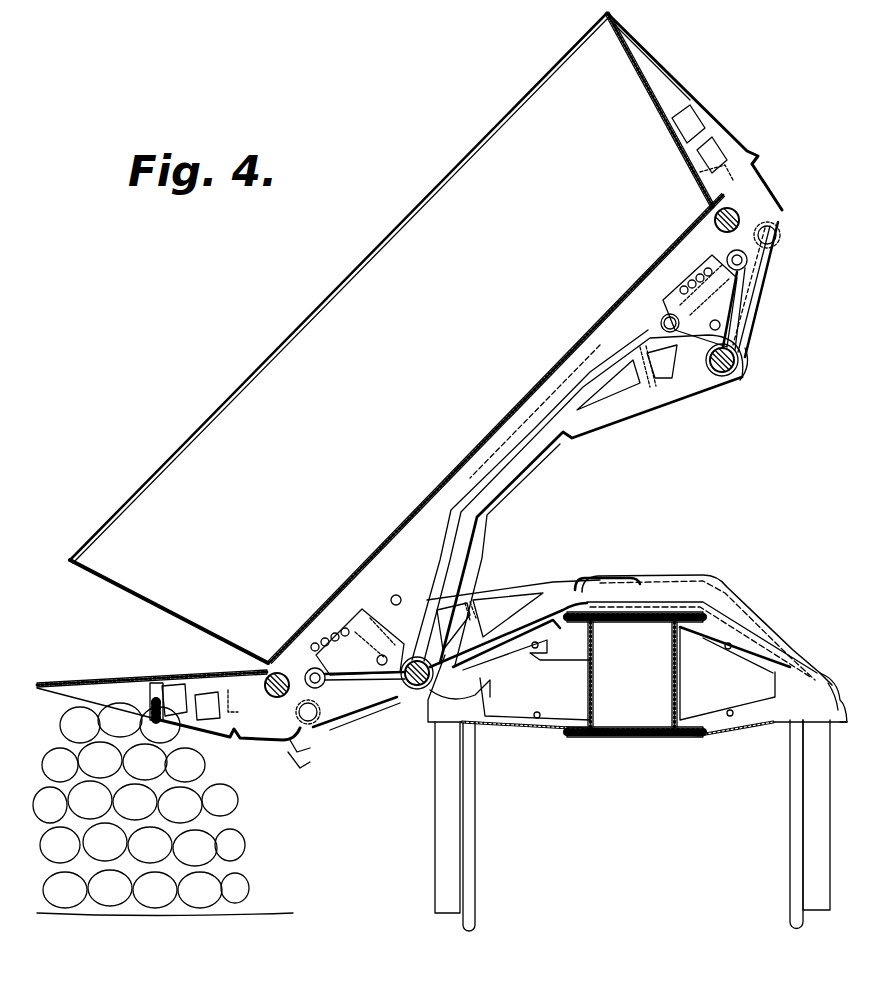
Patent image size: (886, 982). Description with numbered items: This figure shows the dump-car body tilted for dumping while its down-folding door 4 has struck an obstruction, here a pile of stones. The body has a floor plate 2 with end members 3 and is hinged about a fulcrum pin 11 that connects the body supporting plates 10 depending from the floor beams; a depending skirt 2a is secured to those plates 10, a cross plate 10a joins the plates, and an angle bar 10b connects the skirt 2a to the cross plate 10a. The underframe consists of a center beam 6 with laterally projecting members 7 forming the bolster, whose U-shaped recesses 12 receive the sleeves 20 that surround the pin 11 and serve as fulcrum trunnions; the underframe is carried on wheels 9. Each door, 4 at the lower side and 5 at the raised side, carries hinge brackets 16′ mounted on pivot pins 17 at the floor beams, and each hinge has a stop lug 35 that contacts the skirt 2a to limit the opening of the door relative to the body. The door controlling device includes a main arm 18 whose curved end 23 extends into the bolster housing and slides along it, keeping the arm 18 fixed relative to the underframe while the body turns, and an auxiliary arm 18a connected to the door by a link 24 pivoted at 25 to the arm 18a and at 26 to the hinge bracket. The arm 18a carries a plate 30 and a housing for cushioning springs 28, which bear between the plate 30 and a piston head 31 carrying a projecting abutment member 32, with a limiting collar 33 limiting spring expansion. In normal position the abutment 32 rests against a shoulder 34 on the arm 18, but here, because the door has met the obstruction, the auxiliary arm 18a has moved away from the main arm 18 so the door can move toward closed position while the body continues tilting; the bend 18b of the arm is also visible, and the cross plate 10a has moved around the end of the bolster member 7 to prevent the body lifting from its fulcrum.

The floor plate 2 is at (574, 356).
The depending skirt 2a is at (300, 767).
The end member 3 is at (340, 338).
The down-folding door 4 is at (143, 683).
The down-folding door 5 is at (650, 105).
The center beam 6 is at (598, 655).
The laterally projecting member 7 is at (552, 632).
The wheel 9 is at (442, 868).
The body supporting plate 10 is at (740, 307).
The cross plate 10a is at (767, 337).
The angle bar 10b is at (297, 752).
The pin 11 is at (740, 366).
The U-shaped recess 12 is at (434, 724).
The hinge bracket 16′ is at (743, 183).
The pivot pin 17 is at (743, 207).
The arm 18 is at (676, 388).
The auxiliary arm 18a is at (668, 287).
The link arm bend 18b is at (578, 437).
The sleeve 20 is at (733, 372).
The curved end 23 is at (492, 695).
The link 24 is at (750, 262).
The pivot 25 is at (753, 280).
The pivot 26 is at (778, 220).
The cushioning spring 28 is at (695, 270).
The plate 30 is at (735, 318).
The piston head 31 is at (705, 290).
The projecting abutment member 32 is at (663, 322).
The limiting collar 33 is at (663, 300).
The shoulder 34 is at (680, 323).
The stop lug 35 is at (750, 150).